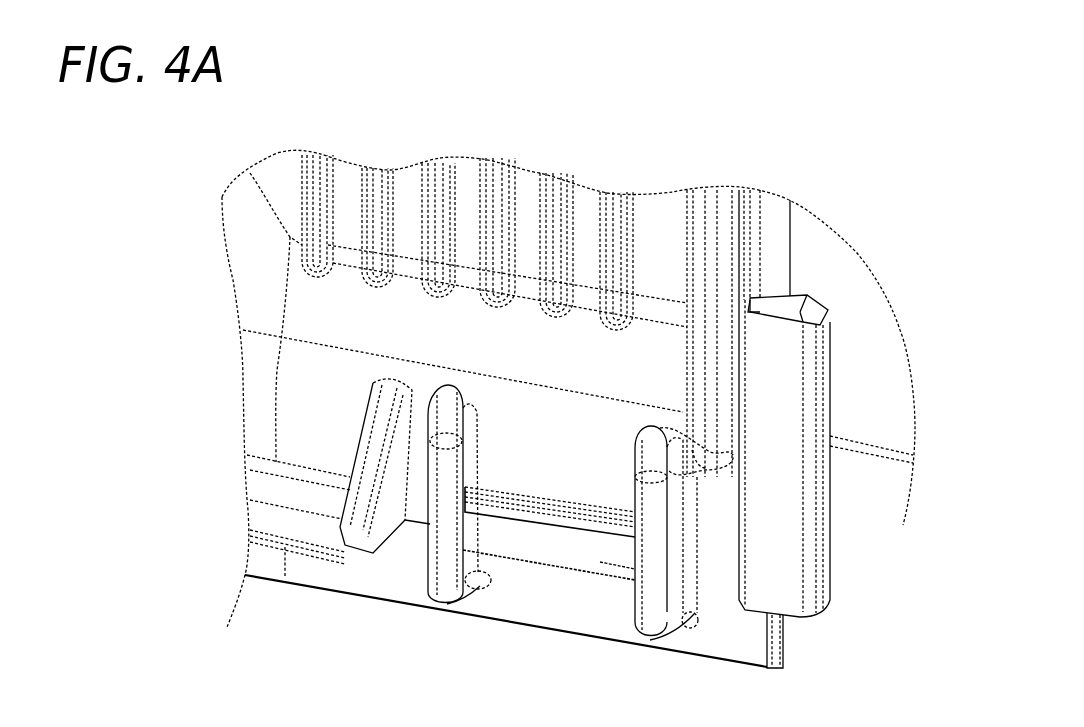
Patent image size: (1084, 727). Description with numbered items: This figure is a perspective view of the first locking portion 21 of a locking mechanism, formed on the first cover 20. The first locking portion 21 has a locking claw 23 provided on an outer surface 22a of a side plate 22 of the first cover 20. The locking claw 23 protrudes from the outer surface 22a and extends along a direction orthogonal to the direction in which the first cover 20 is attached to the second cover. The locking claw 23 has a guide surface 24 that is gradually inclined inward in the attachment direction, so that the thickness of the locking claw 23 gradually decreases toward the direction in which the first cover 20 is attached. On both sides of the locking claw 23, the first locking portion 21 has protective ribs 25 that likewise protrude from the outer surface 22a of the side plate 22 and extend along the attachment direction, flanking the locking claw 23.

The first cover 20 is at (834, 572).
The first locking portion 21 is at (528, 472).
The side plate 22 is at (782, 640).
The outer surface 22a is at (623, 597).
The locking claw 23 is at (568, 520).
The guide surface 24 is at (572, 545).
The protective ribs 25 is at (430, 549).